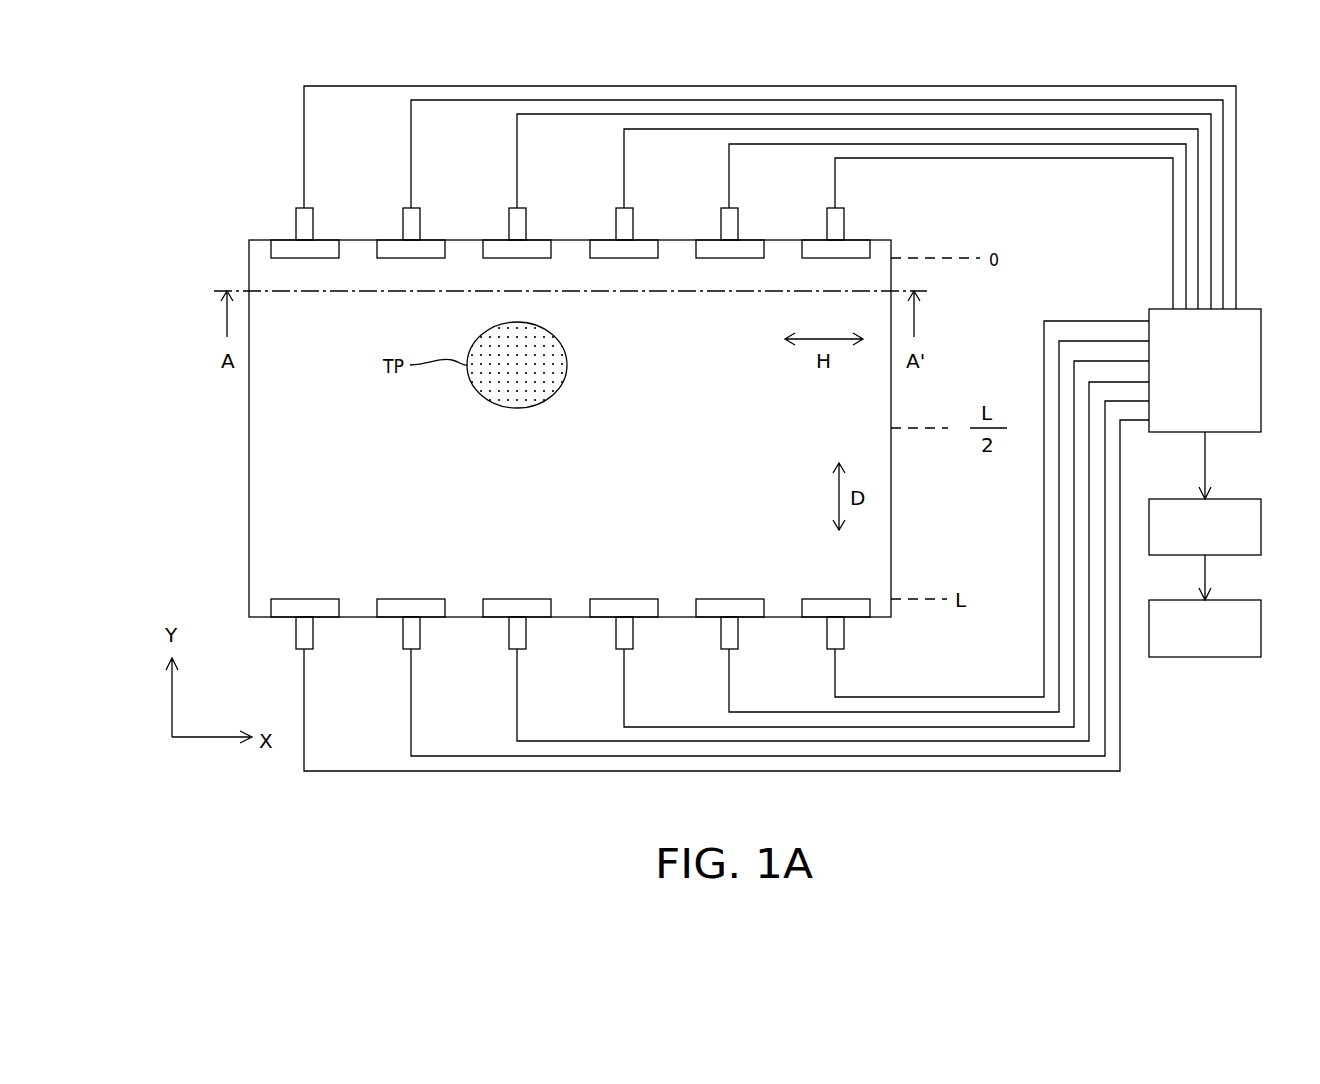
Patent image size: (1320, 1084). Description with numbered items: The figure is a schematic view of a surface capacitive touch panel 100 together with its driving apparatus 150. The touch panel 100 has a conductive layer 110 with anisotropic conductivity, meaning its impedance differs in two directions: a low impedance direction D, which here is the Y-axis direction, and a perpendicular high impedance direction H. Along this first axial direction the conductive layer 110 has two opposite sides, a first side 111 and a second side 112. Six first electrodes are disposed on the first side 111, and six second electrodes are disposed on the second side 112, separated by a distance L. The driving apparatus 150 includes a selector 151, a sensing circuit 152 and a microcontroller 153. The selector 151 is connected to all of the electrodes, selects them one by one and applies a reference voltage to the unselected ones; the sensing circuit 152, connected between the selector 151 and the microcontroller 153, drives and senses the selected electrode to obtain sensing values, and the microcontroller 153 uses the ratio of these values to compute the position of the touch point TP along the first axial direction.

The capacitive touch panel 100 is at (459, 809).
The conductive layer 110 is at (249, 427).
The first side 111 is at (880, 618).
The second side 112 is at (880, 240).
The driving apparatus 150 is at (1220, 516).
The selector 151 is at (1262, 335).
The sensing circuit 152 is at (1236, 499).
The microcontroller 153 is at (1236, 600).